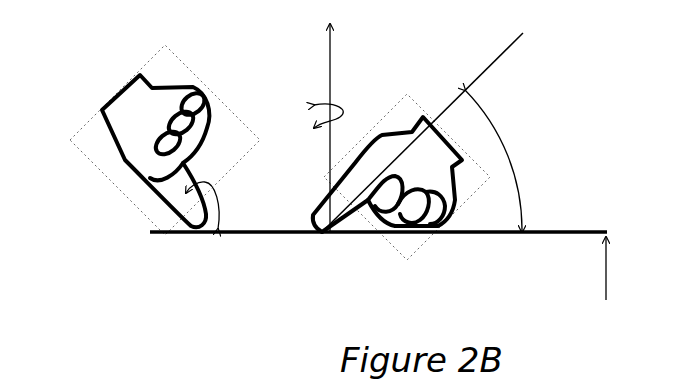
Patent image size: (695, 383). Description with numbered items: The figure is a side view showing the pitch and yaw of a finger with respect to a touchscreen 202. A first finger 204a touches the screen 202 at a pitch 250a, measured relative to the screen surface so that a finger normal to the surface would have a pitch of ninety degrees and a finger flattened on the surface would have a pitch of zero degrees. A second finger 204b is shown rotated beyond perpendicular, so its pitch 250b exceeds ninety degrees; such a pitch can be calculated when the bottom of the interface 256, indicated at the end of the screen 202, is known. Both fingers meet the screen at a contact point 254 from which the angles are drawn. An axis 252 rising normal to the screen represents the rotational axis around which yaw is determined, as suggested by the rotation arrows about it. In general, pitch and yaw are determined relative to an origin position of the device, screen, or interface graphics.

The touchscreen 202 is at (577, 231).
The finger 204a is at (320, 198).
The finger 204b is at (115, 162).
The pitch 250a is at (441, 132).
The pitch 250b is at (218, 202).
The axis 252 is at (330, 62).
The contact point 254 is at (320, 234).
The bottom of the interface 256 is at (599, 291).